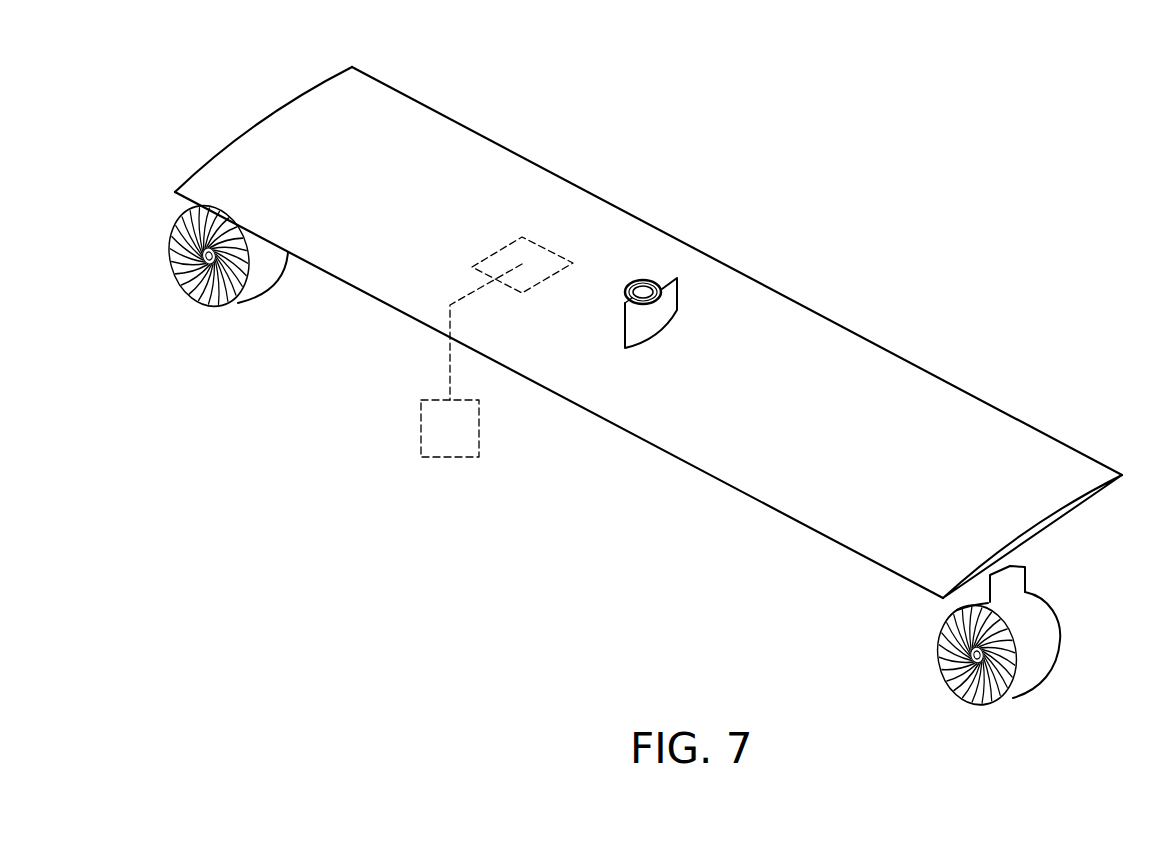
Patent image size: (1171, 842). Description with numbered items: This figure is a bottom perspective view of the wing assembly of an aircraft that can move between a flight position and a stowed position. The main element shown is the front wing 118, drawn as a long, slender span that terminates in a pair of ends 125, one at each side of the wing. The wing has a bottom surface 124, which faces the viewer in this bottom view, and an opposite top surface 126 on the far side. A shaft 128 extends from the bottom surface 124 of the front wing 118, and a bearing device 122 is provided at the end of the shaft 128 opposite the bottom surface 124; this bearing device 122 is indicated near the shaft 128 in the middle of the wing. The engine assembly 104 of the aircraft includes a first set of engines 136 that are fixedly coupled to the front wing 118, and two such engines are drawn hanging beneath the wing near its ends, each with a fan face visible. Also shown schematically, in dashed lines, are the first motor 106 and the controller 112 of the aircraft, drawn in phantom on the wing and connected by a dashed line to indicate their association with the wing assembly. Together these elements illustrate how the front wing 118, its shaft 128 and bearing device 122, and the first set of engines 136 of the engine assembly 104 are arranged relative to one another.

The engine assembly 104 is at (661, 478).
The first motor 106 is at (497, 246).
The controller 112 is at (450, 458).
The front wing 118 is at (648, 328).
The bearing device 122 is at (628, 276).
The bottom surface 124 is at (408, 108).
The pair of ends 125 is at (265, 118).
The top surface 126 is at (375, 299).
The shaft 128 is at (650, 290).
The first set of engines 136 is at (228, 306).